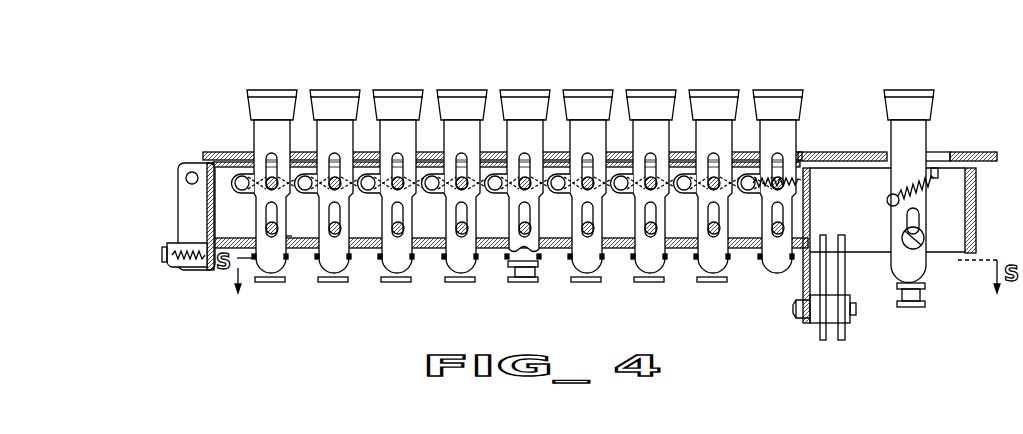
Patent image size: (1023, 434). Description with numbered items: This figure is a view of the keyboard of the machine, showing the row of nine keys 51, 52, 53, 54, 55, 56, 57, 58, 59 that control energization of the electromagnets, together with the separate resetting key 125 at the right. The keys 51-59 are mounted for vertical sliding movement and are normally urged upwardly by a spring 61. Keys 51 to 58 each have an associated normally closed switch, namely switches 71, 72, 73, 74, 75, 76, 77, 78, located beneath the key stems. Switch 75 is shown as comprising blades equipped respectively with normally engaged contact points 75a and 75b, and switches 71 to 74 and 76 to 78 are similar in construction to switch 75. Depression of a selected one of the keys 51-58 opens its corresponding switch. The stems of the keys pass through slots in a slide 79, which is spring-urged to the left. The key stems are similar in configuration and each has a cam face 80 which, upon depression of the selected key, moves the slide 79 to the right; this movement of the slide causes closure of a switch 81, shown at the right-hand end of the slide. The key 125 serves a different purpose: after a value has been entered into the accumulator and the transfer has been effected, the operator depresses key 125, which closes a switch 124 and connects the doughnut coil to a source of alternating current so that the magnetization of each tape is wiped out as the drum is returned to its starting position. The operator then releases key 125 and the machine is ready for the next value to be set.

The key 51 is at (265, 91).
The key 52 is at (327, 91).
The key 53 is at (391, 91).
The key 54 is at (455, 91).
The key 55 is at (514, 91).
The key 56 is at (577, 91).
The key 57 is at (641, 91).
The key 58 is at (703, 91).
The key 59 is at (767, 91).
The spring 61 is at (792, 181).
The normally closed switch 71 is at (269, 284).
The normally closed switch 72 is at (334, 284).
The normally closed switch 73 is at (397, 284).
The normally closed switch 74 is at (460, 284).
The normally closed switch 75 is at (522, 284).
The contact point 75a is at (545, 276).
The contact point 75b is at (508, 262).
The normally closed switch 76 is at (585, 284).
The normally closed switch 77 is at (649, 284).
The normally closed switch 78 is at (712, 284).
The slide 79 is at (180, 246).
The cam face 80 is at (288, 236).
The switch 81 is at (838, 238).
The switch 124 is at (882, 293).
The key 125 is at (900, 91).